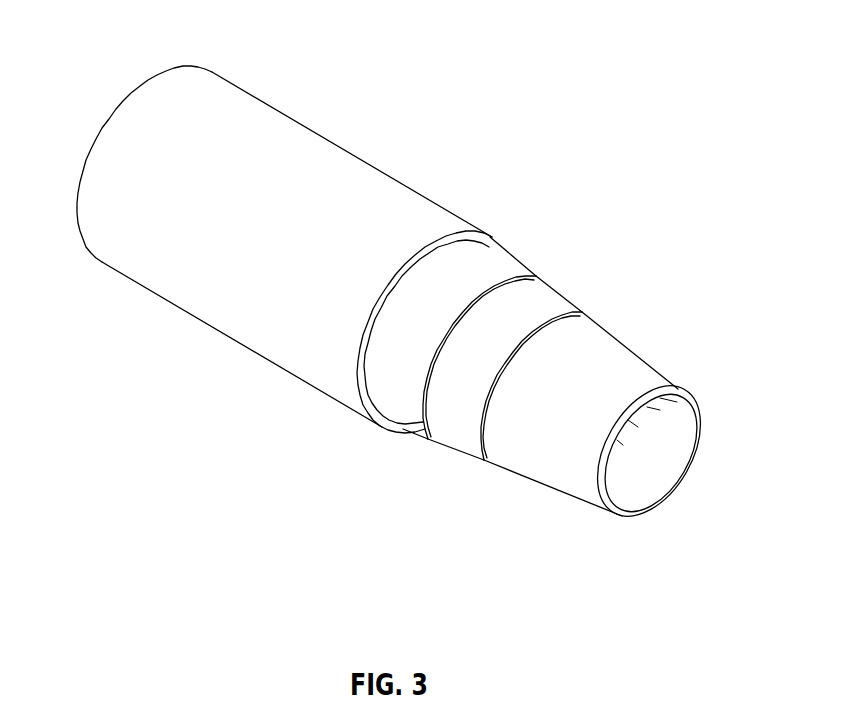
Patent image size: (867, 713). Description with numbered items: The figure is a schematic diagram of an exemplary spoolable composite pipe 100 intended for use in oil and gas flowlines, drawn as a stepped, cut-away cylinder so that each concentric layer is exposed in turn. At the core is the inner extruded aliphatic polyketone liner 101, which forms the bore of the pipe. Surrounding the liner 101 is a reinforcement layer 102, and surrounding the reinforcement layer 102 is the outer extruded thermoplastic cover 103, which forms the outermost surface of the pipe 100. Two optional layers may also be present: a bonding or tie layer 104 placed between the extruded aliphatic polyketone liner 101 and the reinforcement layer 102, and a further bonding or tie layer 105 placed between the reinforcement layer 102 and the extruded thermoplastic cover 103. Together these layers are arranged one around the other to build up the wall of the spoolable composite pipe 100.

The spoolable composite pipe 100 is at (717, 58).
The inner extruded aliphatic polyketone liner 101 is at (590, 508).
The reinforcement layer 102 is at (468, 432).
The outer extruded thermoplastic cover 103 is at (318, 163).
The bonding or tie layer 104 is at (602, 351).
The bonding or tie layer 105 is at (494, 266).